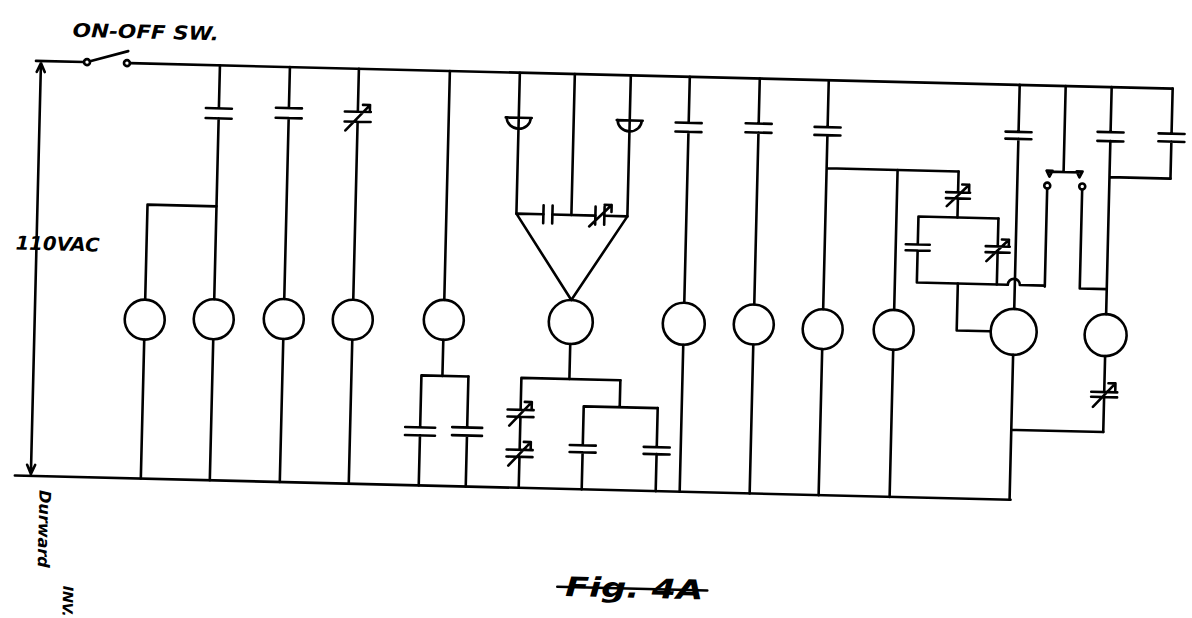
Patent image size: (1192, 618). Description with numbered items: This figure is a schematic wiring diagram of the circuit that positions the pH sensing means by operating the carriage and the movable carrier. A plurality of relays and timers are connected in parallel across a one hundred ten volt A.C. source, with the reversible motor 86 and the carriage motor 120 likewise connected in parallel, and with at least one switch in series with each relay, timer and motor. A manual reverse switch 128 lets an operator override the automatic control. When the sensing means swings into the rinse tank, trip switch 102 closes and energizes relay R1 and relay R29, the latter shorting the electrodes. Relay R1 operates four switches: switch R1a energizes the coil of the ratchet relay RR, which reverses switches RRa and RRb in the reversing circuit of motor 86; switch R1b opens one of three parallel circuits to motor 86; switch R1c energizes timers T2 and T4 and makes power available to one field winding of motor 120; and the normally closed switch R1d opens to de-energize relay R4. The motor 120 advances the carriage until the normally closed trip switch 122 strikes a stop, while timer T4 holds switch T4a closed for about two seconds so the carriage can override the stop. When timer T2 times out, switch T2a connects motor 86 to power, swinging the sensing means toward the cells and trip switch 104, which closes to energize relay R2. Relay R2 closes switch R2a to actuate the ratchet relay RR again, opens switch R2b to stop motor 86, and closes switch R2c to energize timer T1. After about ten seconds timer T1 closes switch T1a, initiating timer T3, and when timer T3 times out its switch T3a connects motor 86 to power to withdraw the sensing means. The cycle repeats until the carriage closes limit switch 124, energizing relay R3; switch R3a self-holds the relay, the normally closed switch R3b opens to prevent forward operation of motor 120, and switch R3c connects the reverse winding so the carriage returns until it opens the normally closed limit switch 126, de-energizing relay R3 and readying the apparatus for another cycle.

The trip switch 102 is at (208, 110).
The trip switch 104 is at (278, 109).
The relay switch R1d is at (348, 111).
The relay R29 is at (168, 309).
The relay R1 is at (237, 307).
The relay R2 is at (307, 305).
The relay R4 is at (376, 304).
The ratchet relay RR is at (467, 302).
The relay contact switch R1a is at (414, 424).
The relay switch R2a is at (491, 422).
The ratchet relay switch RRa is at (546, 204).
The ratchet relay switch RRb is at (604, 205).
The reversible motor 86 is at (596, 300).
The relay switch R1b is at (560, 408).
The relay switch R2b is at (562, 452).
The timer switch T2a is at (622, 440).
The timer switch T3a is at (652, 440).
The relay switch R2c is at (718, 104).
The timer T1 is at (708, 300).
The timer switch T1a is at (788, 103).
The timer T3 is at (777, 299).
The relay switch R1c is at (858, 104).
The timer T2 is at (846, 302).
The timer T4 is at (917, 301).
The relay switch R3b is at (988, 172).
The timer switch T4a is at (950, 222).
The trip switch 122 is at (985, 222).
The carriage motor 120 is at (1039, 300).
The relay switch R3c is at (1005, 111).
The manual reverse switch 128 is at (1077, 188).
The limit switch 124 is at (1136, 104).
The relay switch R3a is at (1155, 113).
The relay R3 is at (1130, 301).
The limit switch 126 is at (1126, 369).